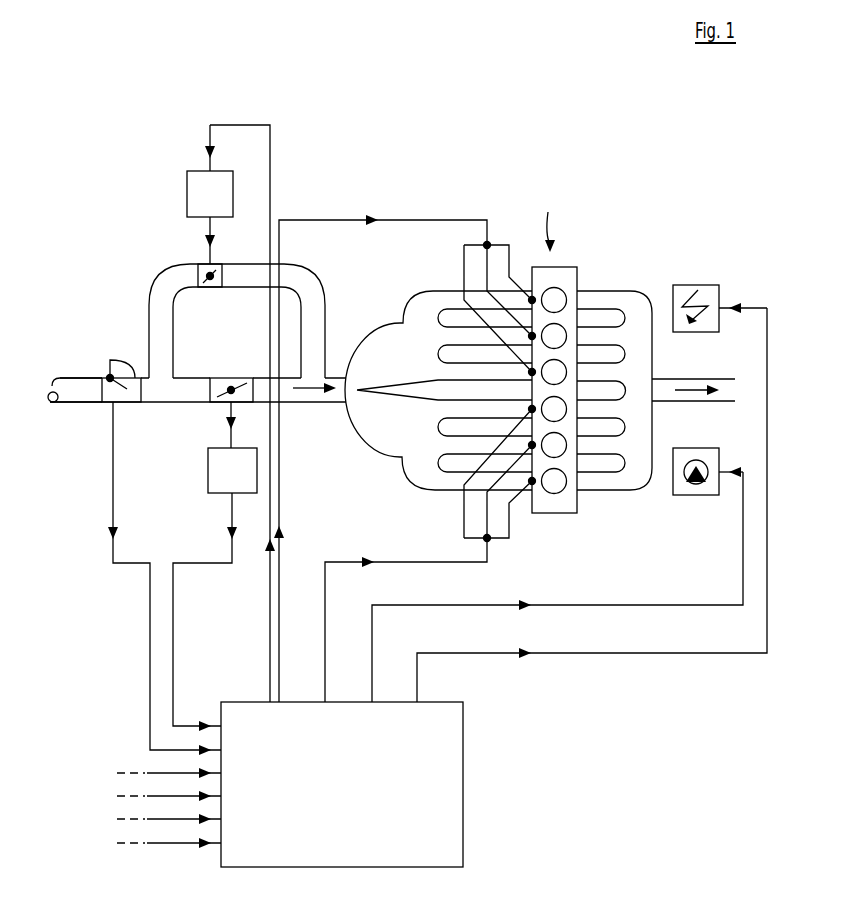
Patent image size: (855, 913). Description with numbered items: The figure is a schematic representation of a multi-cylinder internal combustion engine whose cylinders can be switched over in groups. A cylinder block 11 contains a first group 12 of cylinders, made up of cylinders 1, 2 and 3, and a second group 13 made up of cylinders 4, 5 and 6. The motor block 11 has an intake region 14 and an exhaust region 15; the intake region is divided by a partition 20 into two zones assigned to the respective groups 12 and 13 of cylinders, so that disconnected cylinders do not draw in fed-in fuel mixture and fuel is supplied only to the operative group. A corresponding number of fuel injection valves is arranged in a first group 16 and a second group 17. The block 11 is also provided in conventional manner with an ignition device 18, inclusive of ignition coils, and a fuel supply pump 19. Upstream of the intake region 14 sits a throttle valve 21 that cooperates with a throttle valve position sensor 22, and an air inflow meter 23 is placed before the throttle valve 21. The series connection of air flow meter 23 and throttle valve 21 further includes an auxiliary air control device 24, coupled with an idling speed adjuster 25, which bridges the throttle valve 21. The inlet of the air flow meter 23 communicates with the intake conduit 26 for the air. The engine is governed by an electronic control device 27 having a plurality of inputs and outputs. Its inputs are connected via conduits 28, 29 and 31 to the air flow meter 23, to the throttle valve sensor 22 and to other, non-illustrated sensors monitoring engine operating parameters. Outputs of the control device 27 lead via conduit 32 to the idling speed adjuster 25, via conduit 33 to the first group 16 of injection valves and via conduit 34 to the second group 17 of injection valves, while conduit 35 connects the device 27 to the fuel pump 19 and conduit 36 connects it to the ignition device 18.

The cylinder 1 is at (554, 481).
The cylinder 2 is at (554, 445).
The cylinder 3 is at (554, 409).
The cylinder 4 is at (554, 372).
The cylinder 5 is at (554, 336).
The cylinder 6 is at (554, 300).
The cylinder block 11 is at (561, 208).
The first group of cylinders 12 is at (558, 467).
The second group of cylinders 13 is at (581, 372).
The intake region 14 is at (380, 343).
The exhaust region 15 is at (616, 297).
The first group of fuel injection valves 16 is at (488, 508).
The second group of fuel injection valves 17 is at (487, 257).
The ignition device 18 is at (692, 290).
The fuel supply pump 19 is at (690, 455).
The partition 20 is at (373, 393).
The throttle valve 21 is at (237, 385).
The throttle valve position sensor 22 is at (228, 473).
The air inflow meter 23 is at (120, 395).
The auxiliary air control device 24 is at (203, 267).
The idling speed adjuster 25 is at (198, 190).
The intake conduit 26 is at (77, 395).
The electronic control device 27 is at (430, 772).
The conduit 28 is at (150, 585).
The conduit 29 is at (173, 585).
The conduit 31 is at (183, 796).
The conduit 32 is at (270, 632).
The conduit 33 is at (325, 578).
The conduit 34 is at (279, 468).
The conduit 35 is at (612, 605).
The conduit 36 is at (667, 655).